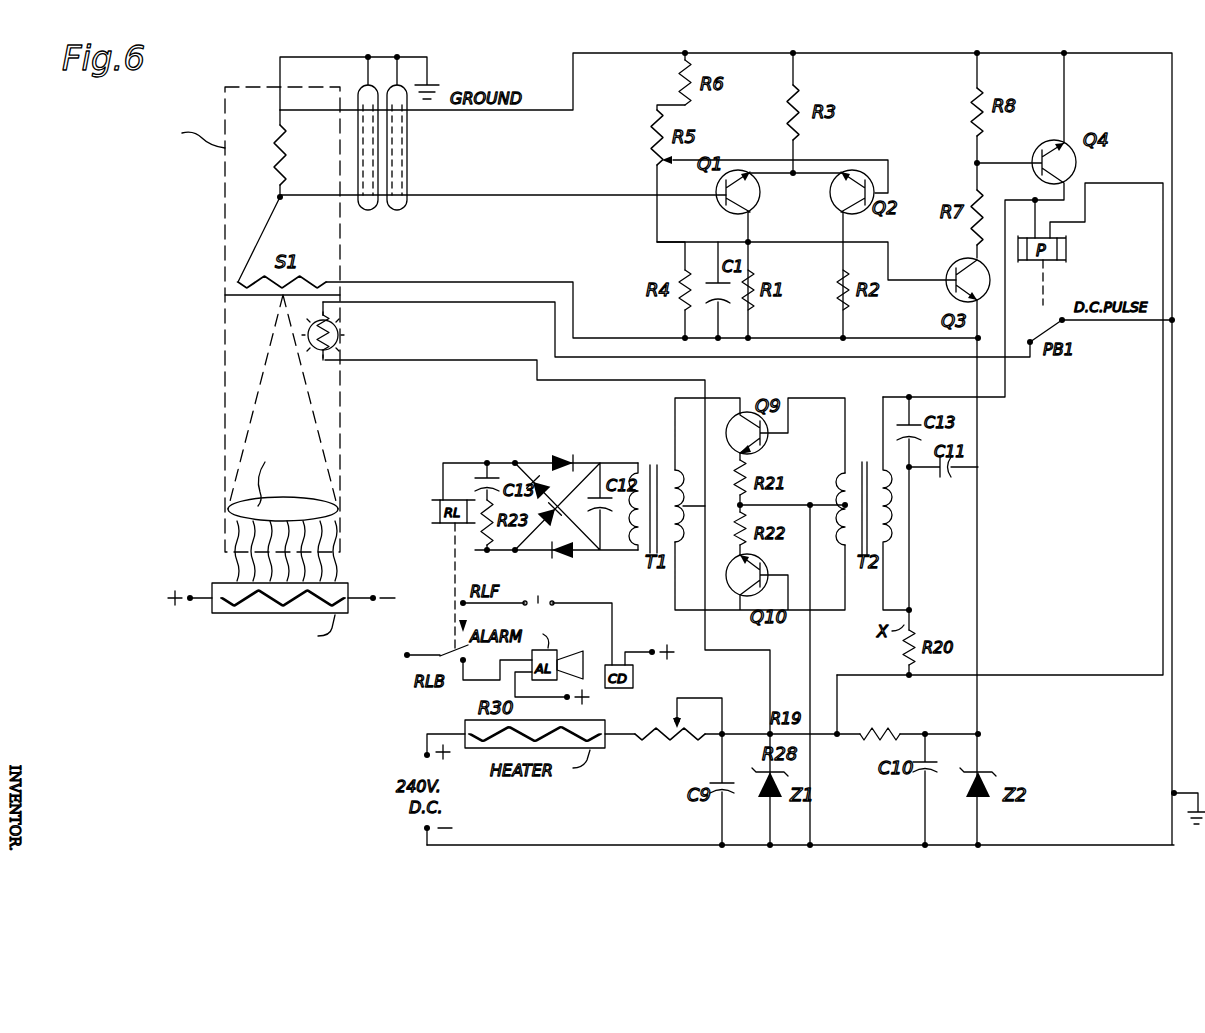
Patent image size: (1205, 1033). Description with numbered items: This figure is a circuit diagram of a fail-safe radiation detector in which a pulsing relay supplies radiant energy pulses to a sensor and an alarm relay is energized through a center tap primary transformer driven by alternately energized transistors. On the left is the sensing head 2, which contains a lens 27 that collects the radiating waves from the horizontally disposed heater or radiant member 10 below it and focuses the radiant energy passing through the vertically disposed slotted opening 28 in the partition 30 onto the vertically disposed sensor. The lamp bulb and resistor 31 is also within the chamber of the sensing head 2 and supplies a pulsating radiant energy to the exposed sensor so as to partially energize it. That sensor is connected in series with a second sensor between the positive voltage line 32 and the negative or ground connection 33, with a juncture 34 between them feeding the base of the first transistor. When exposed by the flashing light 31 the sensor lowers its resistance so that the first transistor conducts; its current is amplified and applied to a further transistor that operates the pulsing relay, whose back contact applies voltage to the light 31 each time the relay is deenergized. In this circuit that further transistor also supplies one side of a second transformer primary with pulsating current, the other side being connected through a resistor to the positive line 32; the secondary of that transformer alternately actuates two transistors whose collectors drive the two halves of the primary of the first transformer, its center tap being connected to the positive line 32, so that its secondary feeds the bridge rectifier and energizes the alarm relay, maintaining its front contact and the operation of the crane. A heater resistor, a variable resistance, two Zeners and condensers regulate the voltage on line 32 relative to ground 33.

The sensing head 2 is at (225, 228).
The heater or radiant member 10 is at (222, 598).
The lens 27 is at (280, 505).
The slotted opening 28 is at (283, 298).
The partition 30 is at (225, 298).
The lamp bulb and resistor 31 is at (345, 337).
The positive voltage line 32 is at (575, 284).
The negative or ground connection 33 is at (573, 112).
The juncture 34 is at (284, 196).